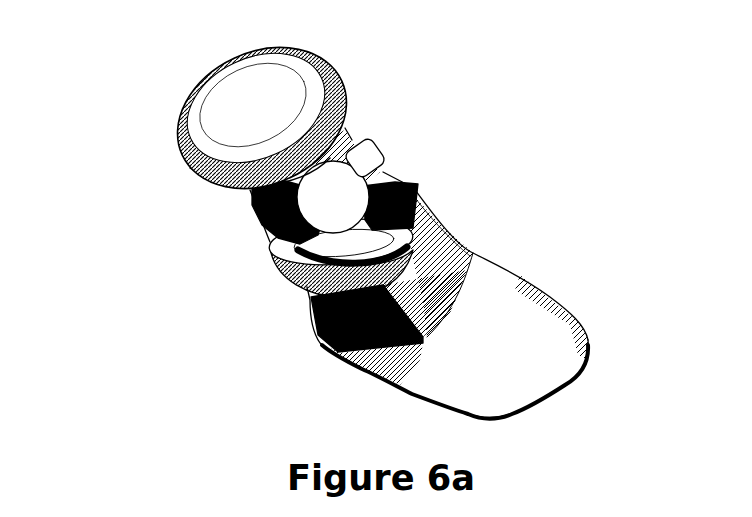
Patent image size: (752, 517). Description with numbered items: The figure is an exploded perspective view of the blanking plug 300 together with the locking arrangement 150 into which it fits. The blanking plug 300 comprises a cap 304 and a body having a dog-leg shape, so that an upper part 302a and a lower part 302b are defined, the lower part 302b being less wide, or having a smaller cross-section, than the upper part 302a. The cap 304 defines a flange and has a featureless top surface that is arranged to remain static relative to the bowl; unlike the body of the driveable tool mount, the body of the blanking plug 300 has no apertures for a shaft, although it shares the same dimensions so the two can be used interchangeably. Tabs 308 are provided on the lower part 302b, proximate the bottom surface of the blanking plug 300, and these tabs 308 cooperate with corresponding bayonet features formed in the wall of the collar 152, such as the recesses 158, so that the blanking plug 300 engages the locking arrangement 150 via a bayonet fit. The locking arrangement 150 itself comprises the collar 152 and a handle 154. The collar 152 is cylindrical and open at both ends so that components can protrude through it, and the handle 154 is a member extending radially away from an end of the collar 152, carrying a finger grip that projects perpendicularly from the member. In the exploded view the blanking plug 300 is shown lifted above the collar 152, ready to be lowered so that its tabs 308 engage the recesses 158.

The blanking plug 300 is at (380, 212).
The cap 304 is at (183, 108).
The upper part of the body 302a is at (333, 143).
The lower part of the body 302b is at (258, 205).
The tab 308 is at (265, 237).
The recess 158 is at (405, 187).
The collar 152 is at (443, 228).
The handle 154 is at (517, 272).
The locking arrangement 150 is at (495, 282).